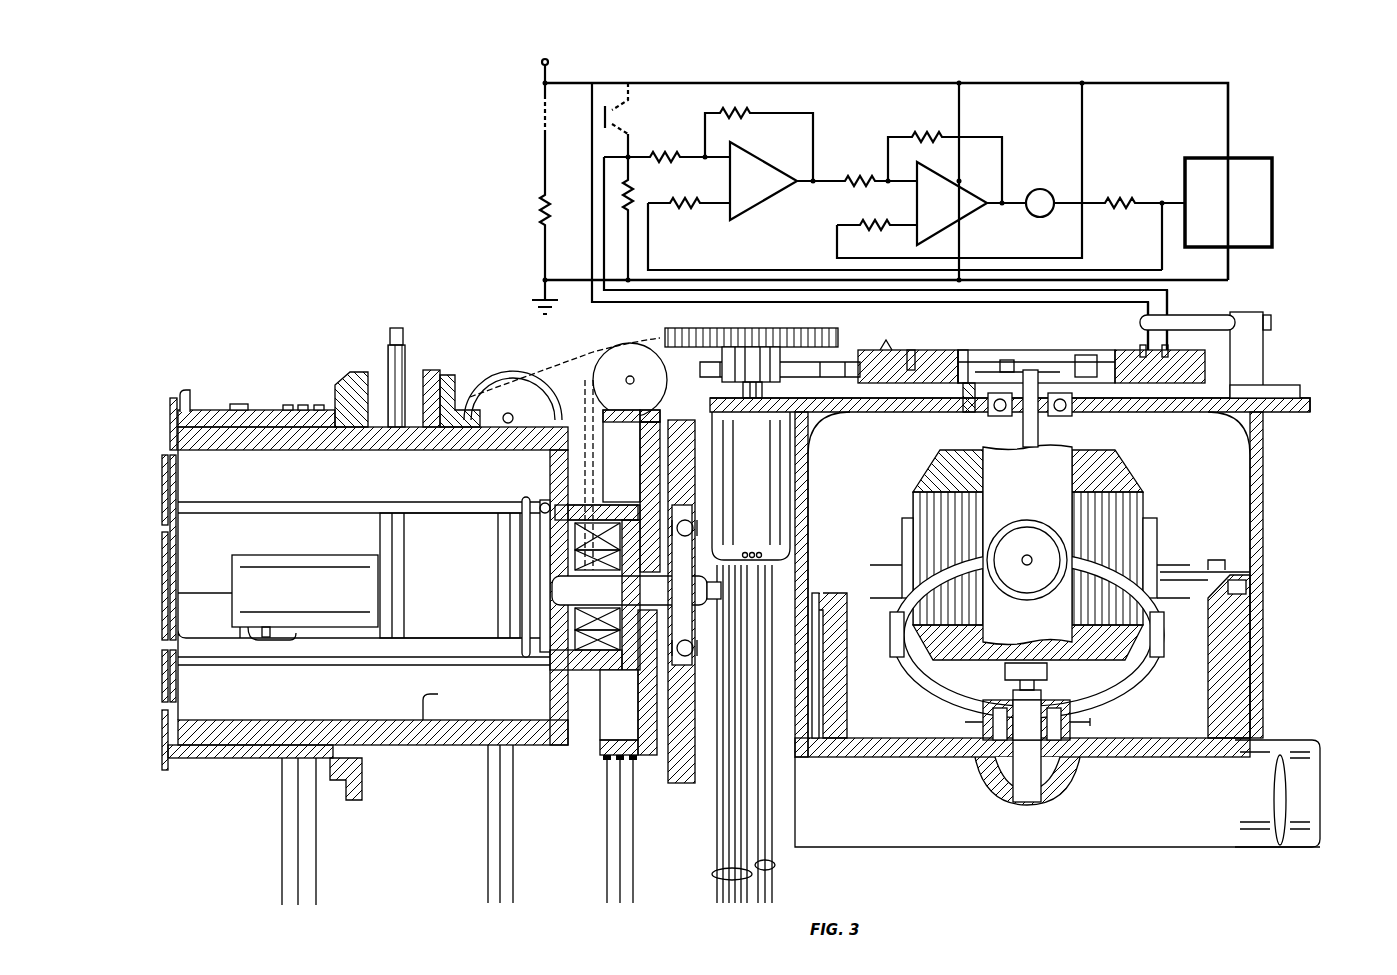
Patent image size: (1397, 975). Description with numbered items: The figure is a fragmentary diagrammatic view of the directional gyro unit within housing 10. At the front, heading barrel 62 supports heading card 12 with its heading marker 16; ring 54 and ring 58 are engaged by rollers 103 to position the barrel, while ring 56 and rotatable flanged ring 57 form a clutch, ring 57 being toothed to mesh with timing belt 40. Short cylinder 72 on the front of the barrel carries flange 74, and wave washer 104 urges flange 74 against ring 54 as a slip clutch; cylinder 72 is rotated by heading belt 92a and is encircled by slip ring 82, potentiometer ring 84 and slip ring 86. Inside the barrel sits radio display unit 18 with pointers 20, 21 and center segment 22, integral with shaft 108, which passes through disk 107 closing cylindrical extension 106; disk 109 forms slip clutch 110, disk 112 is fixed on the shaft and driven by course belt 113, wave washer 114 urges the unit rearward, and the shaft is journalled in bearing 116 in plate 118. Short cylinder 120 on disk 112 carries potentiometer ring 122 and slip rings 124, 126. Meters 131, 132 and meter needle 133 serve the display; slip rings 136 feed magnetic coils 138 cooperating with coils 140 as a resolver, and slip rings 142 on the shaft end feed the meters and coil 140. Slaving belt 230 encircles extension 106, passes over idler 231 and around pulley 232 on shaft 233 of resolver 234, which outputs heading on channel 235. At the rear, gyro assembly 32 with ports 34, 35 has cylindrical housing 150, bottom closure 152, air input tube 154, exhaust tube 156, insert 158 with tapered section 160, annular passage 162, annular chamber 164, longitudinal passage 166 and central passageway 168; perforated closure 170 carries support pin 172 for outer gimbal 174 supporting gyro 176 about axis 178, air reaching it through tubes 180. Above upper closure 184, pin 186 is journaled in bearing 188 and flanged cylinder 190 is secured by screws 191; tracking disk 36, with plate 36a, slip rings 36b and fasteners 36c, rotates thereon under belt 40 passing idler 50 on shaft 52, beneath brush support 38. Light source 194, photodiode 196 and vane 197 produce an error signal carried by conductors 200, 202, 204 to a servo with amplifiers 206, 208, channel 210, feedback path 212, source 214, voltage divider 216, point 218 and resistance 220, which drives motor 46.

The housing 10 is at (1305, 398).
The heading card 12 is at (162, 750).
The heading marker 16 is at (178, 405).
The radio display unit 18 is at (177, 480).
The upper pointer 20 is at (162, 480).
The lower pointer 21 is at (162, 680).
The center segment 22 is at (162, 580).
The vertical gyro assembly 32 is at (1280, 516).
The air inlet port 34 is at (1025, 803).
The air outlet port 35 is at (815, 745).
The tracking disk 36 is at (1200, 342).
The upper plate 36a is at (962, 350).
The slip rings 36b is at (880, 350).
The fasteners 36c is at (912, 350).
The brush support 38 is at (1272, 322).
The timing belt 40 is at (566, 365).
The motor 46 is at (1040, 189).
The idler 50 is at (506, 372).
The shaft 52 is at (510, 412).
The large diameter ring 54 is at (392, 352).
The large diameter ring 56 is at (432, 368).
The flanged ring 57 is at (450, 375).
The smaller diameter ring 58 is at (375, 775).
The heading barrel 62 is at (440, 703).
The short cylinder 72 is at (258, 760).
The flange 74 is at (345, 372).
The front ring 82 is at (287, 405).
The center ring 84 is at (302, 405).
The rear ring 86 is at (318, 405).
The heading belt 92a is at (238, 405).
The rollers 103 is at (393, 328).
The wave washer 104 is at (170, 424).
The cylindrical extension 106 is at (600, 515).
The disk 107 is at (636, 665).
The shaft 108 is at (636, 590).
The disk 109 is at (522, 535).
The slip clutch 110 is at (545, 500).
The disk 112 is at (636, 728).
The course belt 113 is at (660, 412).
The wave washer 114 is at (604, 587).
The bearing 116 is at (690, 548).
The plate 118 is at (686, 790).
The short cylinder 120 is at (631, 456).
The potentiometer ring 122 is at (617, 762).
The slip ring 124 is at (604, 762).
The slip ring 126 is at (634, 762).
The meter 131 is at (305, 591).
The meter 132 is at (450, 575).
The meter needle 133 is at (420, 630).
The slip rings 136 is at (504, 740).
The magnetic coils 138 is at (588, 576).
The cooperating coils 140 is at (598, 562).
The slip rings 142 is at (712, 874).
The cylindrical housing 150 is at (1265, 458).
The bottom closure 152 is at (1046, 848).
The air input tube 154 is at (1322, 820).
The exhaust tube 156 is at (1322, 762).
The cylindrical insert 158 is at (1245, 655).
The tapered section 160 is at (1252, 572).
The annular passage 162 is at (1240, 575).
The annular chamber 164 is at (1240, 588).
The longitudinal passage 166 is at (830, 685).
The central passageway 168 is at (1095, 740).
The perforated closure member 170 is at (985, 735).
The support pin 172 is at (1048, 700).
The outer gimbal 174 is at (1027, 545).
The gyro 176 is at (1155, 530).
The axis 178 is at (1027, 555).
The tubes 180 is at (1148, 682).
The upper closure member 184 is at (866, 414).
The pin 186 is at (1030, 450).
The bearing 188 is at (1062, 418).
The flanged cylinder 190 is at (1088, 355).
The screws 191 is at (966, 412).
The light source 194 is at (536, 118).
The photodiode 196 is at (620, 117).
The opaque vane 197 is at (1016, 362).
The conductor 200 is at (1167, 284).
The conductor 202 is at (1040, 302).
The conductor 204 is at (968, 292).
The operational amplifier 206 is at (763, 181).
The operational amplifier 208 is at (952, 203).
The channel 210 is at (1114, 270).
The feedback path 212 is at (836, 242).
The current source 214 is at (548, 62).
The zero impedance voltage divider 216 is at (1272, 203).
The point 218 is at (1162, 200).
The resistance 220 is at (628, 207).
The slaving belt 230 is at (652, 348).
The idler 231 is at (692, 345).
The pulley 232 is at (755, 328).
The shaft 233 is at (750, 400).
The resolver 234 is at (751, 486).
The channel 235 is at (775, 865).